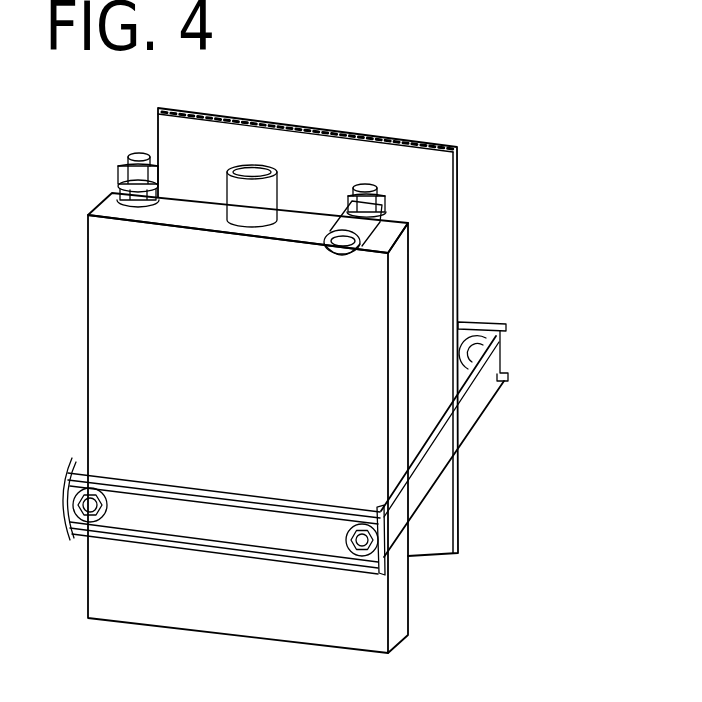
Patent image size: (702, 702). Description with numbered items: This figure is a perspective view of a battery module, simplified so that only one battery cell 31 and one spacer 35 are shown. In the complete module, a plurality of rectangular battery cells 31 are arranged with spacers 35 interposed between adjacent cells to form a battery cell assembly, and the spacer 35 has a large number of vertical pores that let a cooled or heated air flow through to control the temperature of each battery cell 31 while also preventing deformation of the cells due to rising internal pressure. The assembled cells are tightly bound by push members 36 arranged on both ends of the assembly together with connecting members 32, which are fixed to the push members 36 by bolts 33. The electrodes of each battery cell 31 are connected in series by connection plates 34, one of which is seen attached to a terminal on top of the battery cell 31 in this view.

The rectangular battery cell 31 is at (397, 620).
The connecting member 32 is at (485, 397).
The bolt 33 is at (380, 532).
The connection plate 34 is at (353, 258).
The spacer 35 is at (460, 205).
The push member 36 is at (163, 523).